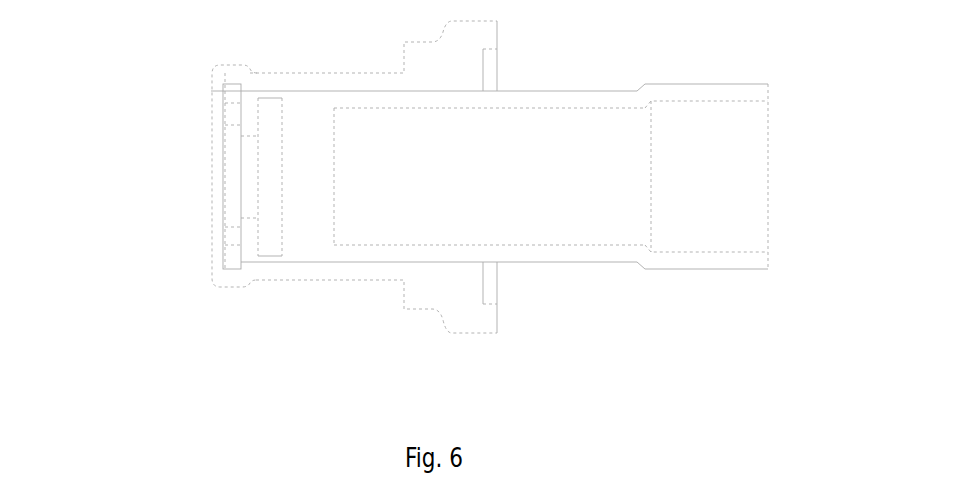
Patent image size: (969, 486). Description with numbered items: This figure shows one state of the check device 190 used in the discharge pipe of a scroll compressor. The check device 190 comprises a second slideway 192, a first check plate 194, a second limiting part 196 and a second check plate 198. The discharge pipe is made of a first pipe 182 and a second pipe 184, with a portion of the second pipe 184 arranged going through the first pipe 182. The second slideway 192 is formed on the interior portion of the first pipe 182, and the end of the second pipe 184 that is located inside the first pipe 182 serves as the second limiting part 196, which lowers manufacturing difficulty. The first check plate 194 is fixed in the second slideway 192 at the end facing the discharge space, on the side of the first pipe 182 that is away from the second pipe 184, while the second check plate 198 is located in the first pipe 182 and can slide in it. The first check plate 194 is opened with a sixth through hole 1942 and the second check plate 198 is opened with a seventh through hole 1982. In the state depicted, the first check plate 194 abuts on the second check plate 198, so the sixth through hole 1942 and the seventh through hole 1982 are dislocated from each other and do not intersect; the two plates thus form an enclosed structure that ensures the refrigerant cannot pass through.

The first pipe 182 is at (437, 81).
The second pipe 184 is at (683, 144).
The check device 190 is at (93, 30).
The second slideway 192 is at (300, 92).
The sixth through hole 1942 is at (233, 113).
The first check plate 194 is at (232, 253).
The seventh through hole 1982 is at (252, 188).
The second check plate 198 is at (250, 253).
The second limiting part 196 is at (335, 253).